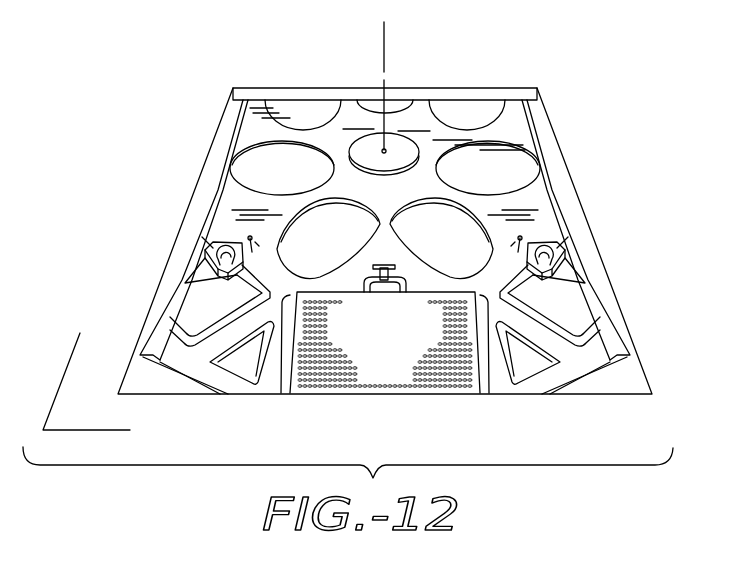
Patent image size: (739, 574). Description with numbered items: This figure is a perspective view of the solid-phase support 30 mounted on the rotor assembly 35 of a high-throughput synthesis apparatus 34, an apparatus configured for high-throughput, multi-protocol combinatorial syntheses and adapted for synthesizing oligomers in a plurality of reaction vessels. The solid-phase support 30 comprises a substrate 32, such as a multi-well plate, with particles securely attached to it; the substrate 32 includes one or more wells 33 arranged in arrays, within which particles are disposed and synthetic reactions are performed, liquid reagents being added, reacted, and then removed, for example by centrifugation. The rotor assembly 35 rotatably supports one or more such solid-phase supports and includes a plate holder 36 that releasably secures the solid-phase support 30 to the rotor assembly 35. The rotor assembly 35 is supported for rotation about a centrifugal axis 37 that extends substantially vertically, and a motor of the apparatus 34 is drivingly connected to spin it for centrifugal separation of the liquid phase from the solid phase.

The solid-phase support 30 is at (299, 400).
The substrate 32 is at (478, 394).
The wells 33 is at (460, 387).
The apparatus 34 is at (558, 34).
The rotor assembly 35 is at (615, 381).
The plate holder 36 is at (273, 264).
The centrifugal axis 37 is at (385, 42).